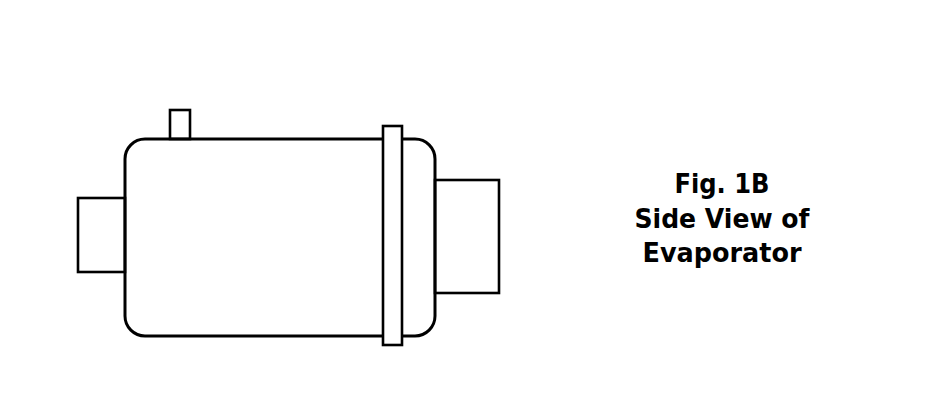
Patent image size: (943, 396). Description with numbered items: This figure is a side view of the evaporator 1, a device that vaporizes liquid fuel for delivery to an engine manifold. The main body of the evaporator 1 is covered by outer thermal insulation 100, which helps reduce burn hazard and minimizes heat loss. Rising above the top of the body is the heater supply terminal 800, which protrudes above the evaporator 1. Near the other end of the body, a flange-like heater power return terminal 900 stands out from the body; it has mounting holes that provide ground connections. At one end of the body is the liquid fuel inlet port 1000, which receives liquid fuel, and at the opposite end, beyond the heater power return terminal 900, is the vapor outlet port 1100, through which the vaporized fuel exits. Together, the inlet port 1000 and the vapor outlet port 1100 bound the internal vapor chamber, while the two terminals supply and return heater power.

The evaporator 1 is at (70, 78).
The outer thermal insulation 100 is at (268, 138).
The heater supply terminal 800 is at (168, 108).
The heater power return terminal 900 is at (397, 126).
The liquid fuel inlet port 1000 is at (102, 195).
The vapor outlet port 1100 is at (467, 178).